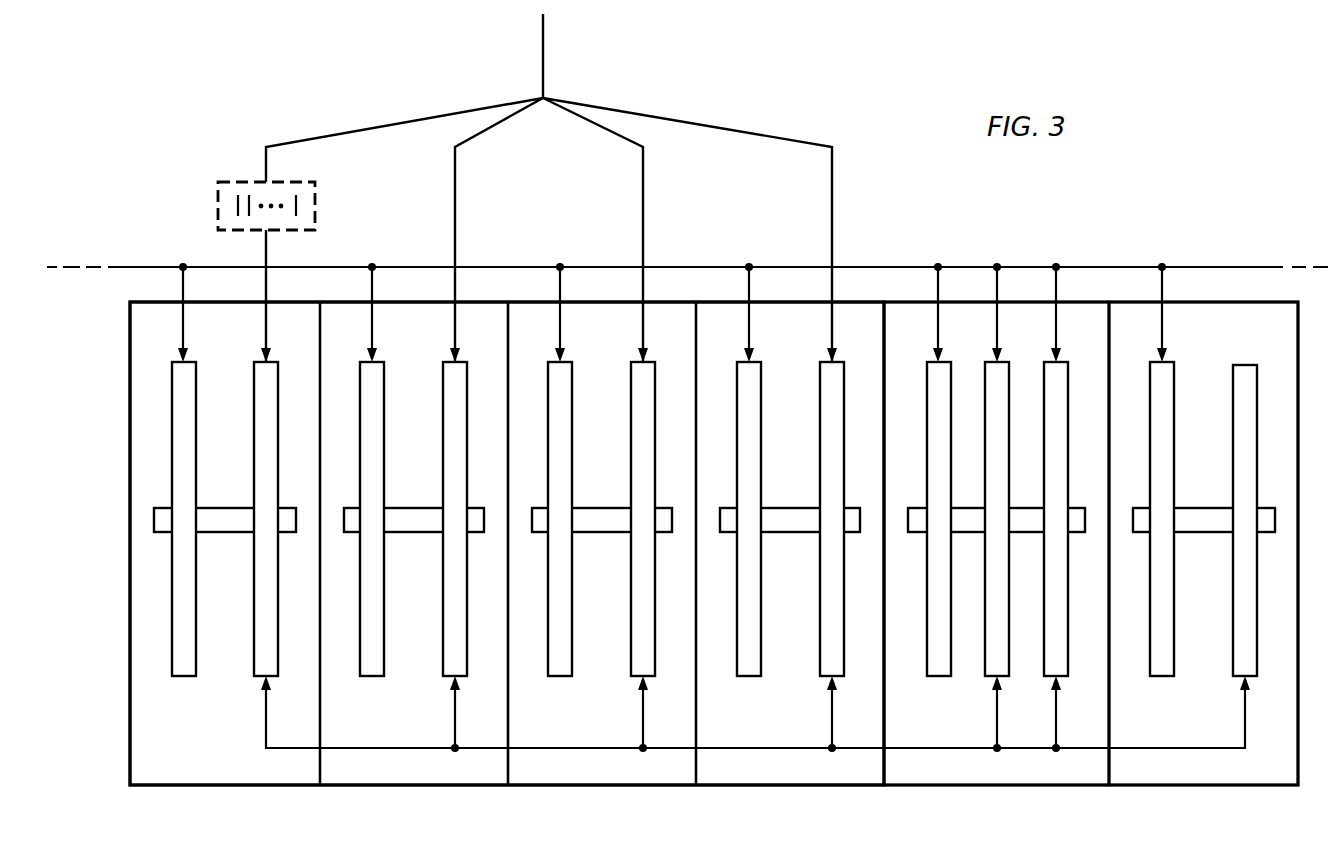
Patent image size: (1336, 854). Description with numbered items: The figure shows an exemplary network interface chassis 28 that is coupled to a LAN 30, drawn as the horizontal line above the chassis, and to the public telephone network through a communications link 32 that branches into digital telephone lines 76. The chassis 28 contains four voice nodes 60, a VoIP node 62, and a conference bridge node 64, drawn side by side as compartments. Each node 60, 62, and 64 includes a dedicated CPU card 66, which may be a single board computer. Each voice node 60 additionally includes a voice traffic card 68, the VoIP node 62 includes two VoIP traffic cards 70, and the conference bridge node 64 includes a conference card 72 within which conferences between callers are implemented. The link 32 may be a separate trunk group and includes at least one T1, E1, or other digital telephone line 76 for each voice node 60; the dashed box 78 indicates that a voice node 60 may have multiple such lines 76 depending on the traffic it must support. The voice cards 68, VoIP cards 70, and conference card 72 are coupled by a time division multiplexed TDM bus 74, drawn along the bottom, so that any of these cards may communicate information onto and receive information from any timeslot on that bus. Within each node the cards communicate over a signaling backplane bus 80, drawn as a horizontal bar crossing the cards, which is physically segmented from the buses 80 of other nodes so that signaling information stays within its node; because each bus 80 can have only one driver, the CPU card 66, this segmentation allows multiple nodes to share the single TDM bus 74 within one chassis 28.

The network interface chassis 28 is at (1030, 203).
The LAN 30 is at (1212, 262).
The communications link 32 is at (540, 57).
The voice node 60 is at (780, 814).
The VoIP node 62 is at (990, 786).
The conference bridge node 64 is at (1178, 786).
The CPU card 66 is at (1156, 706).
The voice traffic card 68 is at (806, 700).
The VoIP traffic card 70 is at (1080, 702).
The conference card 72 is at (1230, 680).
The TDM bus 74 is at (270, 752).
The digital telephone line 76 is at (645, 206).
The dashed box 78 is at (218, 207).
The signaling backplane bus 80 is at (1212, 505).